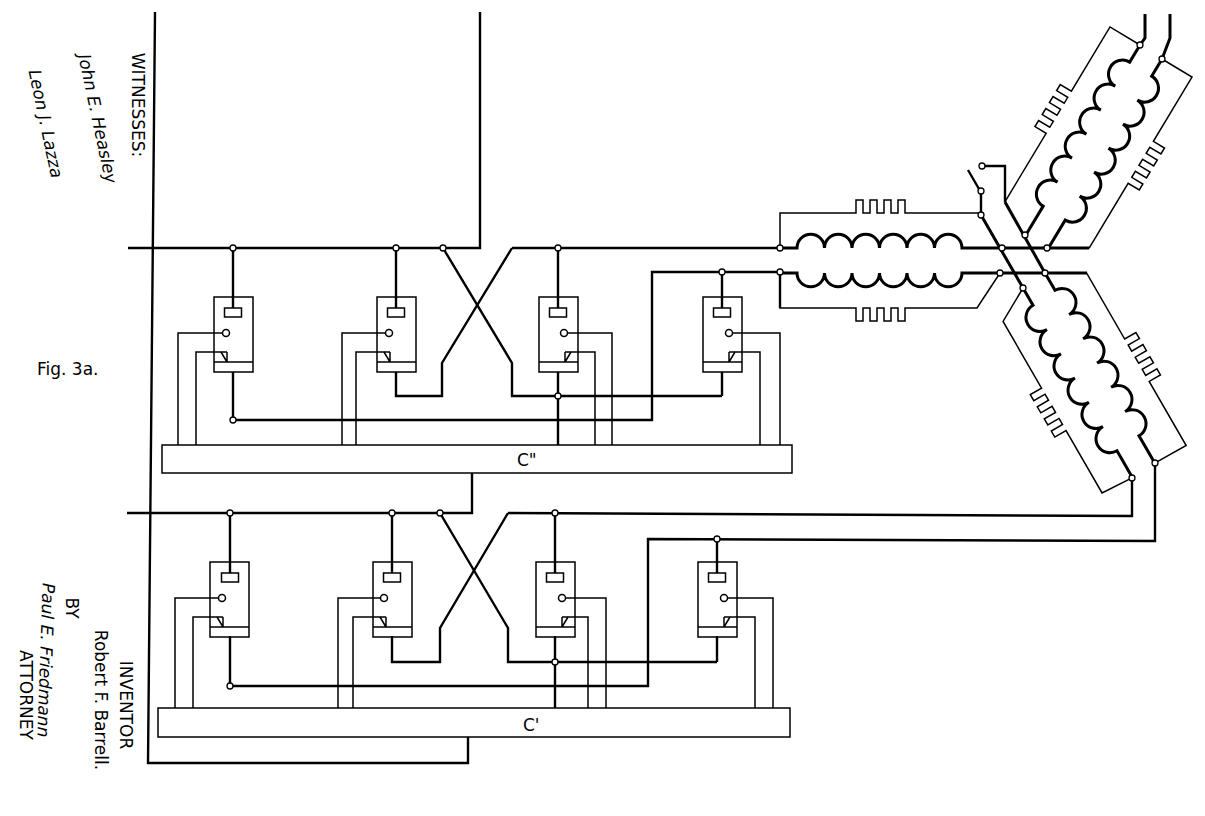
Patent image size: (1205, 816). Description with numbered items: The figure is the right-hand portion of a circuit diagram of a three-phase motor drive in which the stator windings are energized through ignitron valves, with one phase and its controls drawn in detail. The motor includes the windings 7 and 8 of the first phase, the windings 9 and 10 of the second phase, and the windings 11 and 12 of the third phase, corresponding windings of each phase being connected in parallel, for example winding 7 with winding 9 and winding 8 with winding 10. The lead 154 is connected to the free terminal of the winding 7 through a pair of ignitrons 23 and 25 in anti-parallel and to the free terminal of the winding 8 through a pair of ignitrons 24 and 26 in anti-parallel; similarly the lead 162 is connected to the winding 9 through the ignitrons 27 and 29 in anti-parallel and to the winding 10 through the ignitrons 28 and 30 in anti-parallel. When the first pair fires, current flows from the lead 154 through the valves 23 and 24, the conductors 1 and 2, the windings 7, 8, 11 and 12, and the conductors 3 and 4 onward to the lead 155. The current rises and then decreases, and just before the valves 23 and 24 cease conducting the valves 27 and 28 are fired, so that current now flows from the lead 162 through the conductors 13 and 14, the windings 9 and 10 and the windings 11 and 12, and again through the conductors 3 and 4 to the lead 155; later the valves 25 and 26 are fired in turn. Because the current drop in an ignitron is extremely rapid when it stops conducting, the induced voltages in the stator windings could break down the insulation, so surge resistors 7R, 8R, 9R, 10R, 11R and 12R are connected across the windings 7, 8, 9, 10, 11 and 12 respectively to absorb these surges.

The lead 155 is at (155, 22).
The lead 154 is at (480, 24).
The conductor 1 is at (632, 248).
The conductor 2 is at (652, 297).
The conductor 13 is at (618, 513).
The conductor 14 is at (258, 686).
The lead 162 is at (170, 513).
The conductor 3 is at (1171, 30).
The conductor 4 is at (1143, 27).
The stator winding 7 is at (934, 232).
The surge resistor 7R is at (887, 200).
The stator winding 8 is at (915, 288).
The surge resistor 8R is at (874, 322).
The stator winding 9 is at (1088, 440).
The surge resistor 9R is at (1032, 412).
The stator winding 10 is at (1133, 418).
The surge resistor 10R is at (1140, 339).
The stator winding 11 is at (1072, 215).
The surge resistor 11R is at (1140, 178).
The stator winding 12 is at (1038, 202).
The surge resistor 12R is at (1040, 101).
The ignitron 23 is at (413, 299).
The ignitron 24 is at (250, 299).
The ignitron 25 is at (739, 299).
The ignitron 26 is at (575, 299).
The ignitron 27 is at (409, 564).
The ignitron 28 is at (246, 564).
The ignitron 29 is at (734, 564).
The ignitron 30 is at (572, 564).